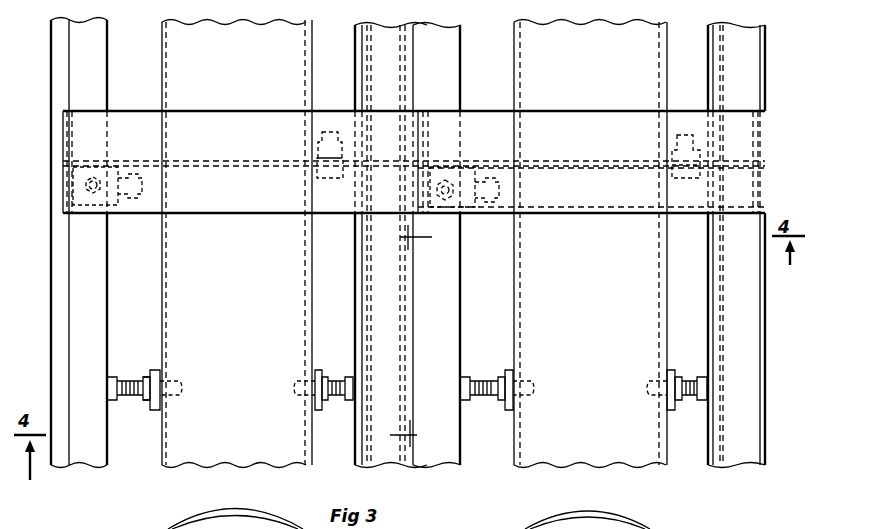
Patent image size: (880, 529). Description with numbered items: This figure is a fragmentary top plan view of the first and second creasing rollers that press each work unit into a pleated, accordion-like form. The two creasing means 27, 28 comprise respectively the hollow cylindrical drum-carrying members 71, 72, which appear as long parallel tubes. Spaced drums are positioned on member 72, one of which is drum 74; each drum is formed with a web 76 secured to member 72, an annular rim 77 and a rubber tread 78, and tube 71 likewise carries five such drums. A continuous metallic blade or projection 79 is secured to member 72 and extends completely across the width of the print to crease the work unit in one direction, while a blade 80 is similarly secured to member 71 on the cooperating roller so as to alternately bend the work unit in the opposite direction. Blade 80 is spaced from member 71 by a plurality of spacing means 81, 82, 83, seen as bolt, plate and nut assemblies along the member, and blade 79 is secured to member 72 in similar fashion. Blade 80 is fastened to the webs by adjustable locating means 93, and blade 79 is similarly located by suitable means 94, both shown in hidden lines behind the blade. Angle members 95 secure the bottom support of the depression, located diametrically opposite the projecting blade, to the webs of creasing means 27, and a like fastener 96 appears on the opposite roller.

The creasing means 27 is at (77, 267).
The creasing means 28 is at (690, 475).
The hollow cylindrical drum-carrying member 71 is at (162, 65).
The hollow cylindrical drum-carrying member 72 is at (514, 60).
The drum 74 is at (552, 115).
The web 76 is at (625, 170).
The annular rim 77 is at (750, 200).
The rubber tread 78 is at (765, 158).
The blade 79 is at (460, 294).
The blade 80 is at (55, 285).
The spacing means 81 is at (130, 380).
The spacing means 82 is at (155, 372).
The spacing means 83 is at (146, 402).
The adjustable locating means 93 is at (118, 213).
The locating means 94 is at (465, 213).
The angle member 95 is at (344, 142).
The hidden fastener 96 is at (702, 148).